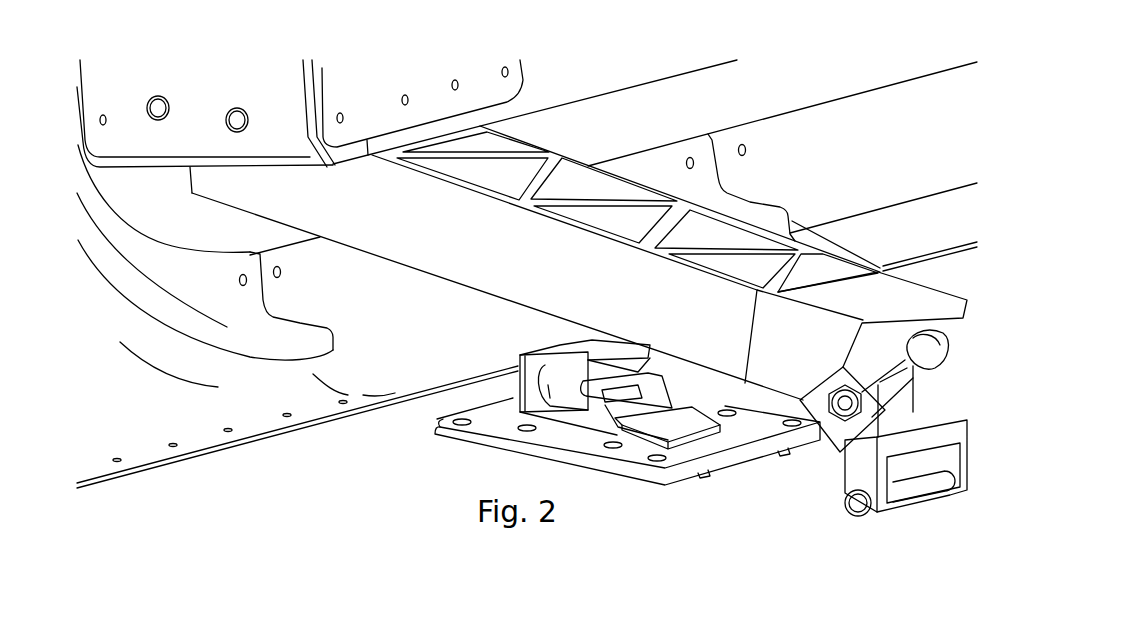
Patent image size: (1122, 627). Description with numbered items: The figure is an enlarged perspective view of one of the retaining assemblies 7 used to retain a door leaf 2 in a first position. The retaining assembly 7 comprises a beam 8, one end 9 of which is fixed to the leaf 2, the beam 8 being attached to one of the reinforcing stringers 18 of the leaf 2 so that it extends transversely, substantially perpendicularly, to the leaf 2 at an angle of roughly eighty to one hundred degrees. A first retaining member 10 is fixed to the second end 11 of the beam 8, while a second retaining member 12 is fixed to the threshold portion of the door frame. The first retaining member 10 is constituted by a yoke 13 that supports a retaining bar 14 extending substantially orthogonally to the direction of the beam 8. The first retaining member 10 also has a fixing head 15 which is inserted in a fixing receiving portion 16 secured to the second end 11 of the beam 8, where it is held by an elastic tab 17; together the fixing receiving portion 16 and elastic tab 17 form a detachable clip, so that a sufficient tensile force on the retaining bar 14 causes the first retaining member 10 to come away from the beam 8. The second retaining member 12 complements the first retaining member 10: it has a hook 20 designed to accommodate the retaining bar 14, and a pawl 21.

The leaf 2 is at (770, 82).
The retaining assembly 7 is at (813, 206).
The beam 8 is at (455, 253).
The end 9 is at (228, 183).
The first retaining member 10 is at (841, 466).
The second end 11 is at (827, 327).
The second retaining member 12 is at (503, 426).
The yoke 13 is at (860, 475).
The retaining bar 14 is at (893, 497).
The fixing head 15 is at (895, 398).
The fixing receiving portion 16 is at (880, 323).
The elastic tab 17 is at (927, 375).
The reinforcing stringer 18 is at (322, 68).
The hook 20 is at (540, 360).
The pawl 21 is at (633, 373).